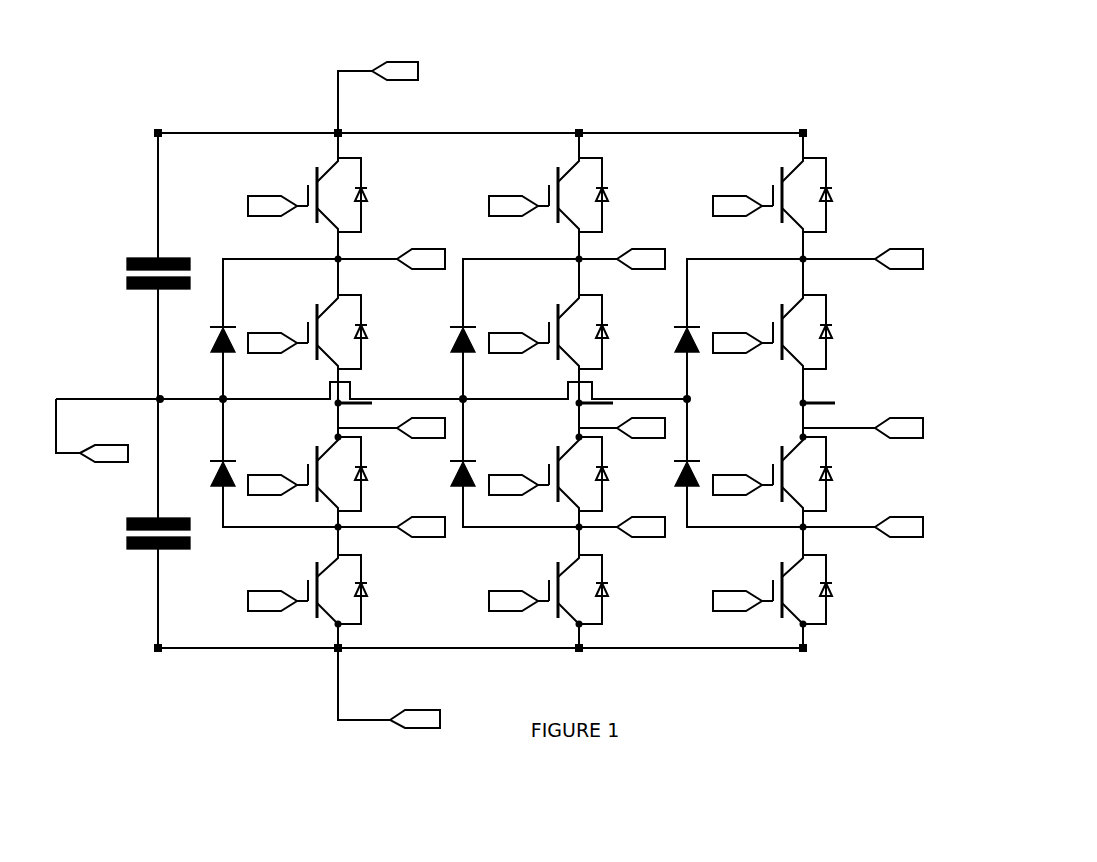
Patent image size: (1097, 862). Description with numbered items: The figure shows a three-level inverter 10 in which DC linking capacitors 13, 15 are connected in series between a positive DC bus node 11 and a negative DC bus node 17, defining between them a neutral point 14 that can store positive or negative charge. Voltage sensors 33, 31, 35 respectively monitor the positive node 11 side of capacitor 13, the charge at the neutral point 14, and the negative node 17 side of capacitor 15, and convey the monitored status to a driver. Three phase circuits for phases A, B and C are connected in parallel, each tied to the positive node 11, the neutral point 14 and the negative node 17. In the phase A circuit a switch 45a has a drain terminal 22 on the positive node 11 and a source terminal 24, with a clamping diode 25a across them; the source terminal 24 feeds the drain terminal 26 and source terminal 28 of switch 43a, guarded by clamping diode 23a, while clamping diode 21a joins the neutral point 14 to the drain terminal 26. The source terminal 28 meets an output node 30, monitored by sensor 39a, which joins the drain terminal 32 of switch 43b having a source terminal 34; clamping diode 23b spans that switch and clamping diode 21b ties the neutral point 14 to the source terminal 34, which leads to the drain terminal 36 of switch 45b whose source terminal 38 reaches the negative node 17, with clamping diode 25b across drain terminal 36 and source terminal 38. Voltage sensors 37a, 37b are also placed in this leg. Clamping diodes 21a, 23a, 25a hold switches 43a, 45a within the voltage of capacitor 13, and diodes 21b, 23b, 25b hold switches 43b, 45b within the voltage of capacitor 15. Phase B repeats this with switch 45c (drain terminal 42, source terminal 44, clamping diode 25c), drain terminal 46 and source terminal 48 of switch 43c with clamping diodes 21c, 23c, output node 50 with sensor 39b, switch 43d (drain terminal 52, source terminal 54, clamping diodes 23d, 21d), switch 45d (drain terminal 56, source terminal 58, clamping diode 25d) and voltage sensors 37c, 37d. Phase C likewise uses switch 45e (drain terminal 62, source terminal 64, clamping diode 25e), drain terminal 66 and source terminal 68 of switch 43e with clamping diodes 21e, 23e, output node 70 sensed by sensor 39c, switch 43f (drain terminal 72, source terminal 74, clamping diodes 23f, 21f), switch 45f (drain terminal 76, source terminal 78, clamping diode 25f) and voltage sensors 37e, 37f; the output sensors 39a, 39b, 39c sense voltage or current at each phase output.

The inverter 10 is at (663, 48).
The positive DC bus node 11 is at (287, 130).
The DC linking capacitor 13 is at (147, 255).
The neutral point 14 is at (160, 396).
The DC linking capacitor 15 is at (149, 552).
The negative DC bus node 17 is at (262, 650).
The voltage sensor 31 is at (106, 465).
The voltage sensor 33 is at (395, 82).
The voltage sensor 35 is at (412, 732).
The clamping diode 21a is at (217, 325).
The clamping diode 21b is at (216, 461).
The clamping diode 21c is at (457, 325).
The clamping diode 21d is at (458, 492).
The clamping diode 21e is at (681, 325).
The clamping diode 21f is at (682, 490).
The drain terminal 22 is at (322, 174).
The source terminal 24 is at (322, 214).
The clamping diode 25a is at (364, 184).
The switch 45a is at (268, 210).
The voltage sensor 37a is at (428, 250).
The drain terminal 26 is at (322, 311).
The source terminal 28 is at (323, 352).
The clamping diode 23a is at (363, 341).
The switch 43a is at (283, 352).
The output node 30 is at (337, 407).
The sensor 39a is at (446, 418).
The drain terminal 32 is at (323, 458).
The source terminal 34 is at (323, 495).
The clamping diode 23b is at (364, 465).
The switch 43b is at (283, 492).
The voltage sensor 37b is at (434, 538).
The drain terminal 36 is at (323, 570).
The source terminal 38 is at (323, 610).
The clamping diode 25b is at (364, 582).
The switch 45b is at (280, 610).
The drain terminal 42 is at (563, 174).
The source terminal 44 is at (563, 214).
The clamping diode 25c is at (605, 203).
The switch 45c is at (527, 197).
The voltage sensor 37c is at (655, 250).
The drain terminal 46 is at (563, 311).
The source terminal 48 is at (564, 352).
The clamping diode 23c is at (605, 341).
The switch 43c is at (527, 335).
The output node 50 is at (578, 407).
The sensor 39b is at (666, 418).
The drain terminal 52 is at (564, 458).
The source terminal 54 is at (565, 495).
The clamping diode 23d is at (607, 468).
The switch 43d is at (527, 480).
The voltage sensor 37d is at (658, 538).
The drain terminal 56 is at (564, 570).
The source terminal 58 is at (564, 610).
The clamping diode 25d is at (605, 582).
The switch 45d is at (527, 596).
The drain terminal 62 is at (787, 174).
The source terminal 64 is at (787, 214).
The clamping diode 25e is at (829, 203).
The switch 45e is at (750, 197).
The voltage sensor 37e is at (892, 250).
The drain terminal 66 is at (787, 311).
The source terminal 68 is at (788, 352).
The clamping diode 23e is at (829, 341).
The switch 43e is at (750, 337).
The output node 70 is at (801, 407).
The sensor 39c is at (925, 418).
The drain terminal 72 is at (788, 458).
The source terminal 74 is at (789, 495).
The clamping diode 23f is at (830, 470).
The switch 43f is at (750, 480).
The voltage sensor 37f is at (906, 538).
The drain terminal 76 is at (788, 570).
The source terminal 78 is at (788, 610).
The clamping diode 25f is at (832, 598).
The switch 45f is at (757, 592).